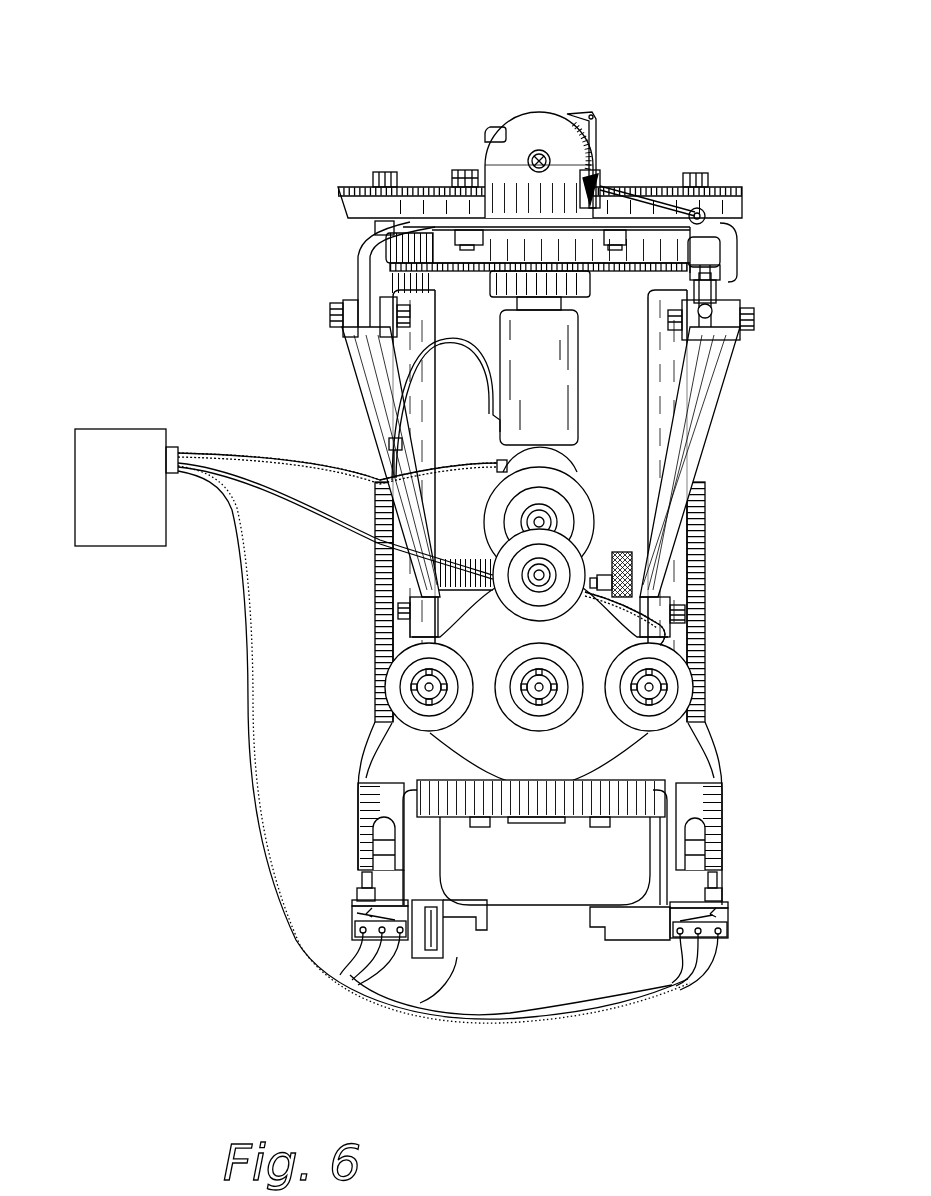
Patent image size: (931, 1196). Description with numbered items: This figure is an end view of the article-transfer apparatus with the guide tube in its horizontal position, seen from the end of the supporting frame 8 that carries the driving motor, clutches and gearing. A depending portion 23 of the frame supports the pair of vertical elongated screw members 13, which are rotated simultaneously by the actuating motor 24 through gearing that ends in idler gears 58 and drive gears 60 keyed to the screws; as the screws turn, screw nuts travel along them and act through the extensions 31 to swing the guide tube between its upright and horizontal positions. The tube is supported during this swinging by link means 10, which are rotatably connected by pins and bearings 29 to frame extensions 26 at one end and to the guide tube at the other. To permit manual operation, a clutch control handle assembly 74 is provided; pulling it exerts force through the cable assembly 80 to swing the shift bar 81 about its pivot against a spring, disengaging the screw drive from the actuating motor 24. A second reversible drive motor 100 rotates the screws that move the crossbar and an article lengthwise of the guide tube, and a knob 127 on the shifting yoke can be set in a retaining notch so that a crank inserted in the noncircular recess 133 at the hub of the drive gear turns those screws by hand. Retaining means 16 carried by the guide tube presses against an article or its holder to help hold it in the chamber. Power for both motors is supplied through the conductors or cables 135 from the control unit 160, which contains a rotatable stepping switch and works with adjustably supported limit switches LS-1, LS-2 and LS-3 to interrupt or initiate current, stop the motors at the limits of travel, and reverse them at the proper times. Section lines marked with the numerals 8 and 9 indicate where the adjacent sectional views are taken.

The supporting frame 8 is at (540, 78).
The section line 9- 9 is at (232, 686).
The link means 10 is at (370, 387).
The elongated screw members 13 is at (380, 582).
The retaining means 16 is at (585, 797).
The depending portion of the supporting frame 23 is at (430, 315).
The actuating motor 24 is at (548, 379).
The frame extensions 26 is at (377, 250).
The pins and bearings 29 is at (330, 318).
The extensions 31 is at (377, 802).
The idler gears 58 is at (445, 190).
The drive gears 60 is at (357, 186).
The clutch control handle assembly 74 is at (722, 256).
The cable assembly 80 is at (637, 190).
The shift bar 81 is at (568, 118).
The reversible drive motor 100 is at (562, 463).
The knob 127 is at (633, 528).
The noncircular recess 133 is at (545, 692).
The conductors or cables 135 is at (332, 535).
The control unit 160 is at (136, 485).
The limit switch LS-1 is at (730, 927).
The limit switch LS-2 is at (357, 925).
The limit switch LS-3 is at (450, 933).